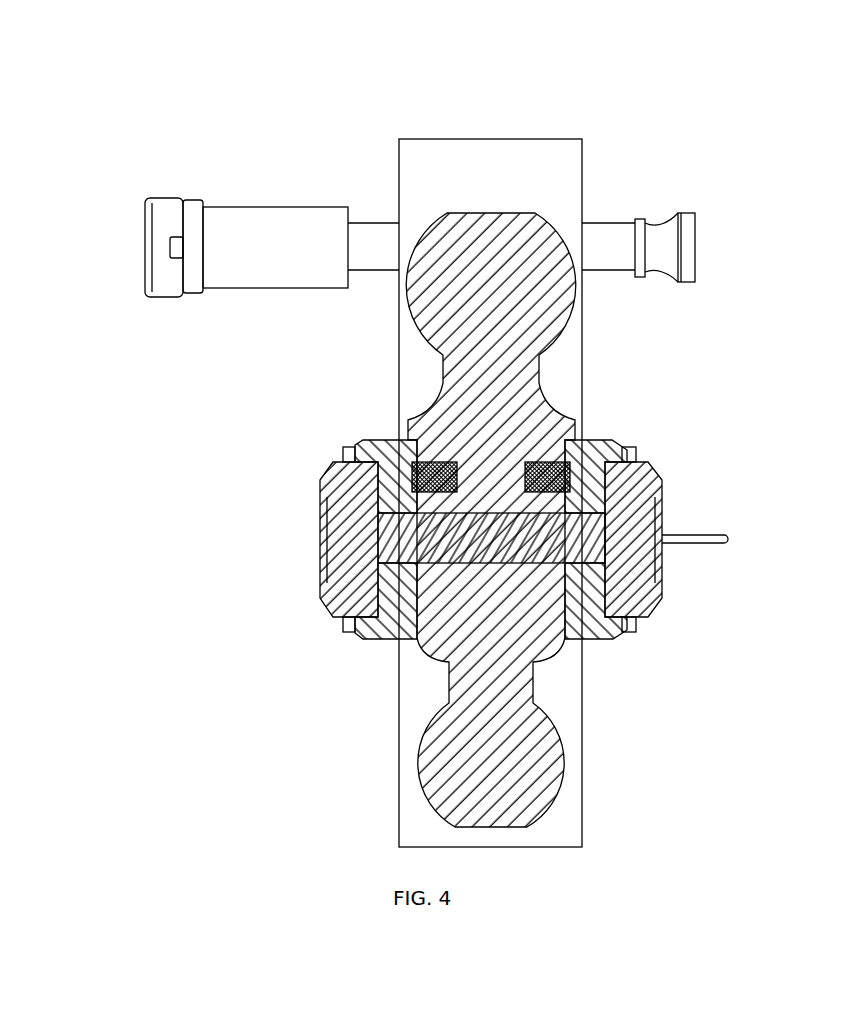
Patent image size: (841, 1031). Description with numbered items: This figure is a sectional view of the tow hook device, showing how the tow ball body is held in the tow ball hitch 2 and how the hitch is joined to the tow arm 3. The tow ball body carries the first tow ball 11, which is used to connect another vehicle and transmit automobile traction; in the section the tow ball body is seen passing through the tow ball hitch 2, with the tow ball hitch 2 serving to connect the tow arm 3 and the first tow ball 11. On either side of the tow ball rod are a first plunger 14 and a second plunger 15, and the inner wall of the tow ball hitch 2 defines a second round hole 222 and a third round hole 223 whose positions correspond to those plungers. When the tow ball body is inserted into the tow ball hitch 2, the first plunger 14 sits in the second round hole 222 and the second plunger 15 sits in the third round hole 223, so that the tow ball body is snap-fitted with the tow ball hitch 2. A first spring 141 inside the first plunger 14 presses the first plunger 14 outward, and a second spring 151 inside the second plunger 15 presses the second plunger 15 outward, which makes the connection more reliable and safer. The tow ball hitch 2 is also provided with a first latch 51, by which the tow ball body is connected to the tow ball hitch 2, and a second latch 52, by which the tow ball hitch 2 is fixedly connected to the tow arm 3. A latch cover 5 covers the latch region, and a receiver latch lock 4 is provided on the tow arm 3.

The tow ball hitch 2 is at (373, 638).
The tow arm 3 is at (493, 178).
The receiver latch lock 4 is at (180, 242).
The latch cover 5 is at (633, 495).
The first tow ball 11 is at (492, 290).
The first plunger 14 is at (408, 480).
The second plunger 15 is at (628, 448).
The first spring 141 is at (435, 470).
The second spring 151 is at (585, 494).
The second round hole 222 is at (400, 489).
The third round hole 223 is at (590, 503).
The first latch 51 is at (623, 630).
The second latch 52 is at (660, 541).